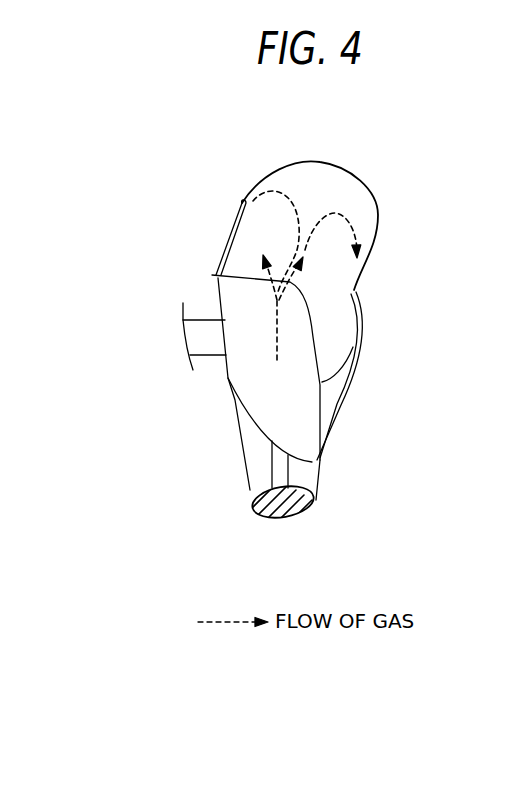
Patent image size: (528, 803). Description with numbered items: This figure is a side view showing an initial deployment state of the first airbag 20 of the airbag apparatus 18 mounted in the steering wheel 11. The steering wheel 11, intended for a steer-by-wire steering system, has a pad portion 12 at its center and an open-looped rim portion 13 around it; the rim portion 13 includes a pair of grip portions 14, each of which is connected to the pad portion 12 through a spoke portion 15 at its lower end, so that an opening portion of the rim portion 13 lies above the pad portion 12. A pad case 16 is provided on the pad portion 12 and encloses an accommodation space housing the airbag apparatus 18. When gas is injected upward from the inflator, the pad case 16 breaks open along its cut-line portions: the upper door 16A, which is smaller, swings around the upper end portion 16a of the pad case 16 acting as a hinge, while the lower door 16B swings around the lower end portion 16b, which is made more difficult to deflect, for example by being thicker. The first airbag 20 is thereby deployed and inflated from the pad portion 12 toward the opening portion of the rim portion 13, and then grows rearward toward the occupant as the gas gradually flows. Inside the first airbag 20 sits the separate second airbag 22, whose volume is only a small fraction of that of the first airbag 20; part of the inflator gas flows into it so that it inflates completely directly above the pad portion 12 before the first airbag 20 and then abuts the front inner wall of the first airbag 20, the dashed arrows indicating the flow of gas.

The steering wheel 11 is at (391, 155).
The pad portion 12 is at (238, 379).
The rim portion 13 is at (336, 497).
The grip portion 14 is at (305, 474).
The spoke portion 15 is at (292, 511).
The pad case 16 is at (212, 246).
The upper door 16A is at (238, 209).
The lower door 16B is at (344, 395).
The upper end portion of the pad case 16a is at (213, 276).
The lower end portion of the pad case 16b is at (317, 459).
The airbag apparatus 18 is at (383, 285).
The first airbag 20 is at (377, 213).
The second airbag 22 is at (270, 188).